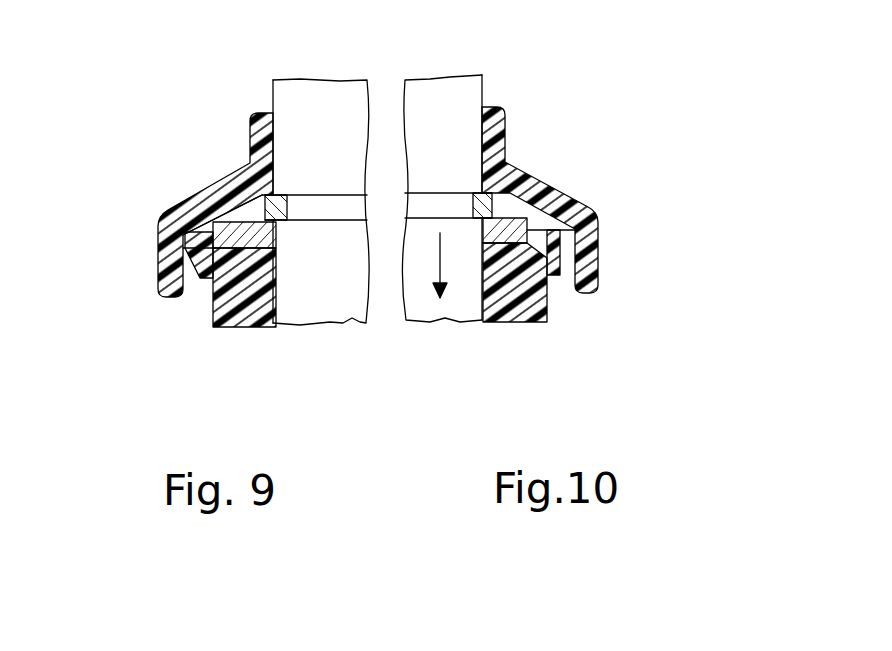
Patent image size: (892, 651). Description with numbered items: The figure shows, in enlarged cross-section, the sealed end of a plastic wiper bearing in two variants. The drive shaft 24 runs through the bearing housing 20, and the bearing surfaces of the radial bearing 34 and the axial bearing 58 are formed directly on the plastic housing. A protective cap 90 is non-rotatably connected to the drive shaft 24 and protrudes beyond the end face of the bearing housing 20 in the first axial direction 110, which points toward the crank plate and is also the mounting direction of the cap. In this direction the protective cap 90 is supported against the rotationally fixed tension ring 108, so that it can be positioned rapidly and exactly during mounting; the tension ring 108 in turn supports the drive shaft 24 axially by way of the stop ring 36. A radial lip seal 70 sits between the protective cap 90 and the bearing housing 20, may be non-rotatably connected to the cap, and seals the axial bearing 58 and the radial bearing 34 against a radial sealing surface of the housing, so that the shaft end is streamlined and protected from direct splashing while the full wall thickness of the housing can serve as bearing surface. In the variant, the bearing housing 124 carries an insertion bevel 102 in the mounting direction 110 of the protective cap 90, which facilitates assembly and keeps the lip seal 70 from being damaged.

In FIG. 9, the bearing housing 20 is at (242, 300).
In FIG. 10, the drive shaft 24 is at (470, 105).
In FIG. 9, the radial bearing 34 is at (272, 318).
In FIG. 9, the stop ring 36 is at (230, 217).
In FIG. 9, the axial bearing 58 is at (183, 248).
In FIG. 10, the radial lip seal 70 is at (598, 212).
In FIG. 9, the protective cap 90 is at (230, 179).
In FIG. 10, the insertion bevel 102 is at (562, 254).
In FIG. 10, the tension ring 108 is at (492, 200).
In FIG. 10, the first axial direction 110 is at (440, 262).
In FIG. 10, the bearing housing 124 is at (536, 322).